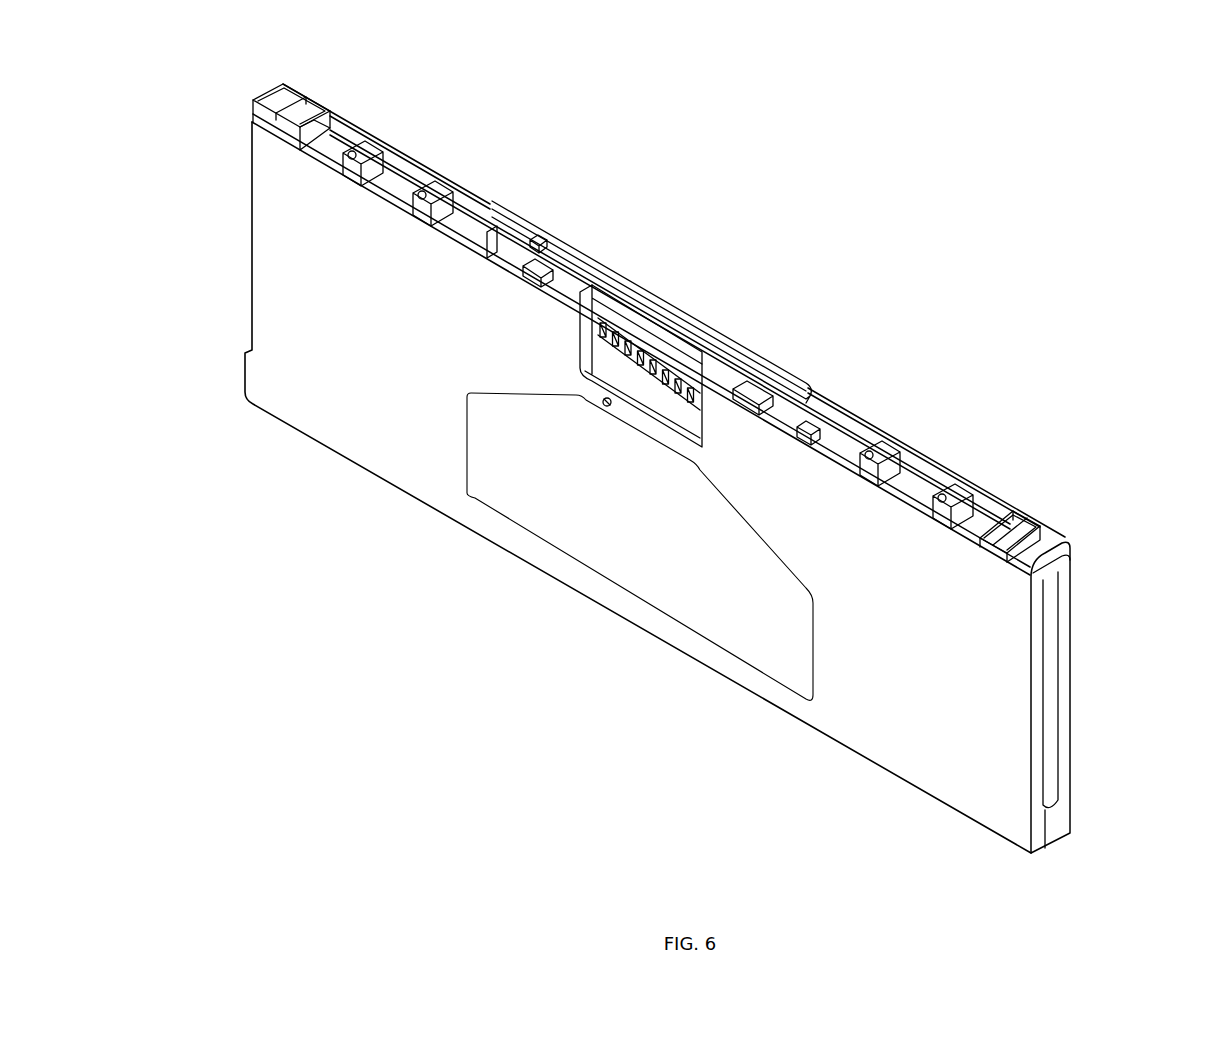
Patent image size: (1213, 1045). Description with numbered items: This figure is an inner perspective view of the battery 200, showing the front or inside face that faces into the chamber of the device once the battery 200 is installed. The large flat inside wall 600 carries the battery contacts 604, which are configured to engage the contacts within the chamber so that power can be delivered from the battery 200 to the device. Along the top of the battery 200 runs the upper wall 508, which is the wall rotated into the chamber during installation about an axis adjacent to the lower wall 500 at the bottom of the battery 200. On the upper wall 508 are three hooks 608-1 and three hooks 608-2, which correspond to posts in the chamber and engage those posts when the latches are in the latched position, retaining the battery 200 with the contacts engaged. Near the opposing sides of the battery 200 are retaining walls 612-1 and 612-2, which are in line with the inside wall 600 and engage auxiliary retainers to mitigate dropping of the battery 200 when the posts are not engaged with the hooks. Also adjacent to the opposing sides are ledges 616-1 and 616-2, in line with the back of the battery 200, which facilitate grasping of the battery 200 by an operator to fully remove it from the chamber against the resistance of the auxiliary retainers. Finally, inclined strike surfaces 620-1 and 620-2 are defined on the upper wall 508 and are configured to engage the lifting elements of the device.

The battery 200 is at (697, 224).
The lower wall 500 is at (943, 803).
The upper wall 508 is at (807, 403).
The inside wall 600 is at (402, 453).
The battery contacts 604 is at (657, 380).
The hooks 608-1 is at (812, 412).
The hooks 608-2 is at (487, 250).
The retaining wall 612-1 is at (1017, 547).
The retaining wall 612-2 is at (253, 110).
The ledge 616-1 is at (1057, 533).
The ledge 616-2 is at (297, 93).
The inclined strike surface 620-1 is at (747, 393).
The inclined strike surface 620-2 is at (540, 272).